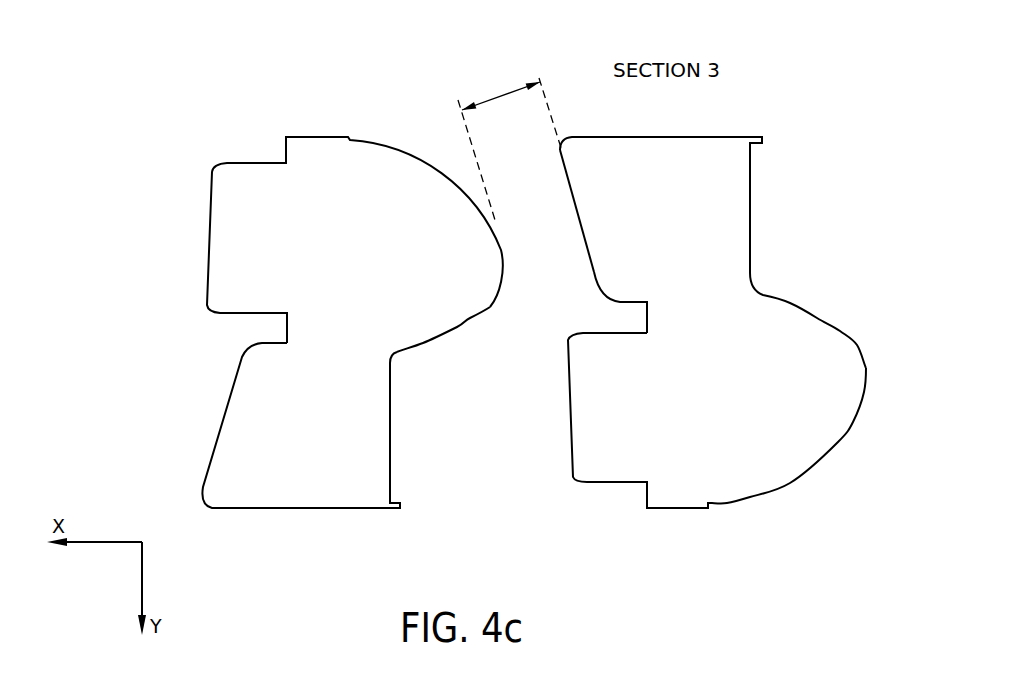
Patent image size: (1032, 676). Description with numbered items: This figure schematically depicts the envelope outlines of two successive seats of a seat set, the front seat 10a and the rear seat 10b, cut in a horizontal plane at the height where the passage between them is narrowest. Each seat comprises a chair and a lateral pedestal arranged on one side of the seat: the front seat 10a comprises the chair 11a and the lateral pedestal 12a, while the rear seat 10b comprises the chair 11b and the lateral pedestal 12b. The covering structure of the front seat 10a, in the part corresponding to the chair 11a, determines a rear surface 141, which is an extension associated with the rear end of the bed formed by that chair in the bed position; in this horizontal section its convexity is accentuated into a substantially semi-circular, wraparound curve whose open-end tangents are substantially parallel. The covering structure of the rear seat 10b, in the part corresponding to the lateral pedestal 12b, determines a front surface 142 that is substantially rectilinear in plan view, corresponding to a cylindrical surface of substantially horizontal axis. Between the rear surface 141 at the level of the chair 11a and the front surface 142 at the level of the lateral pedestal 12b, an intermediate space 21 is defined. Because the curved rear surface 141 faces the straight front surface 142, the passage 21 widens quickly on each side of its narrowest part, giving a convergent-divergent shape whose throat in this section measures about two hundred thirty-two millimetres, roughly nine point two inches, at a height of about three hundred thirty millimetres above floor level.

The front seat 10a is at (285, 322).
The rear seat 10b is at (706, 322).
The chair 11a is at (352, 227).
The chair 11b is at (662, 457).
The lateral pedestal 12a is at (315, 457).
The lateral pedestal 12b is at (657, 227).
The intermediate space 21 is at (555, 245).
The rear surface 141 is at (490, 307).
The front surface 142 is at (594, 268).